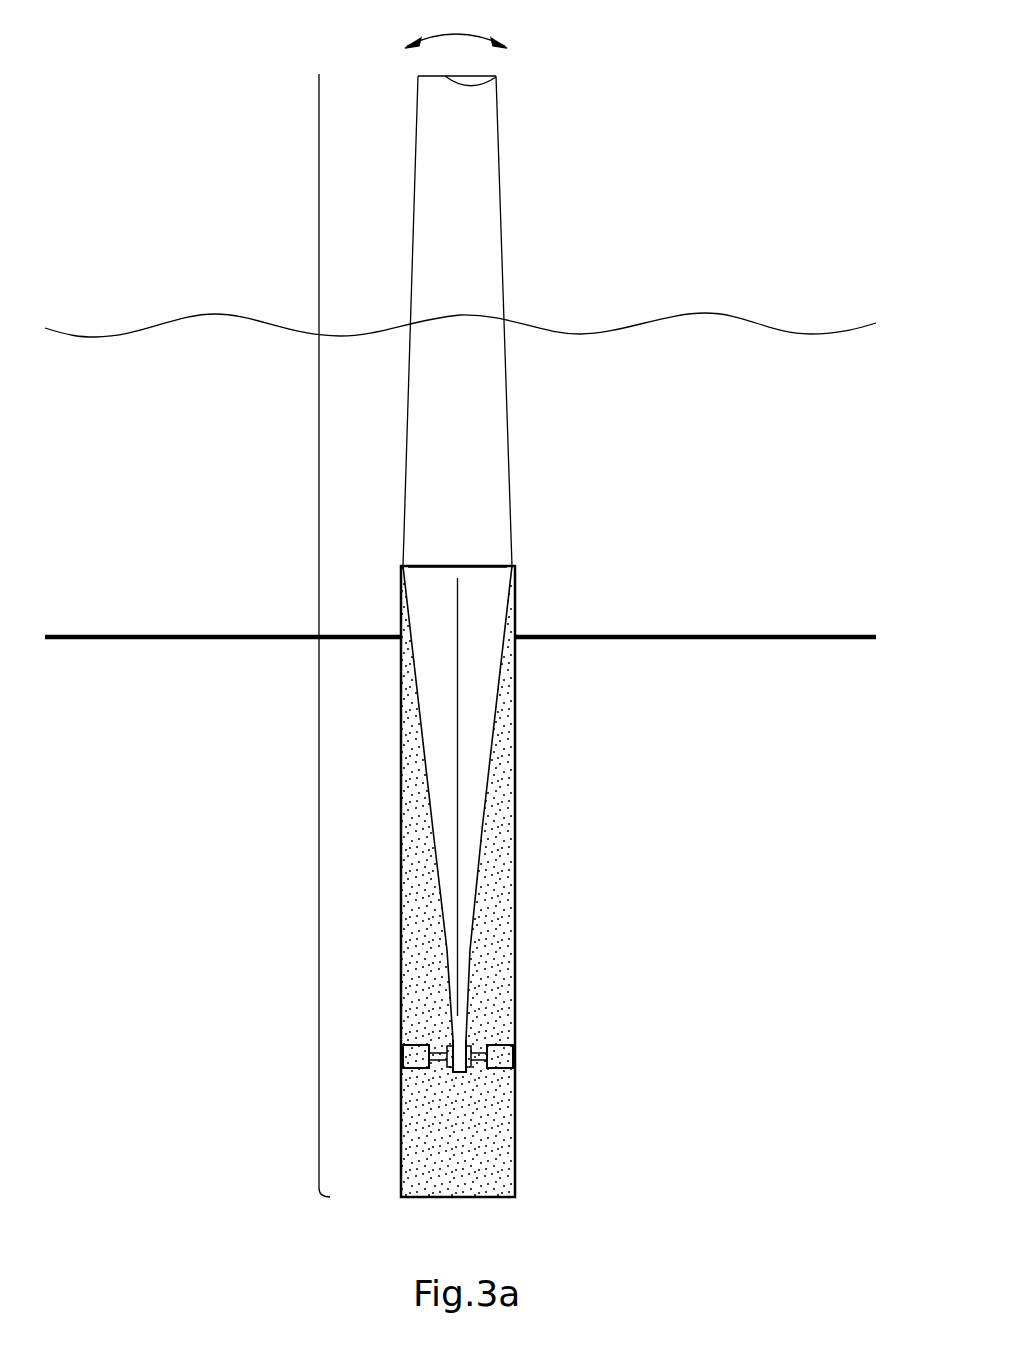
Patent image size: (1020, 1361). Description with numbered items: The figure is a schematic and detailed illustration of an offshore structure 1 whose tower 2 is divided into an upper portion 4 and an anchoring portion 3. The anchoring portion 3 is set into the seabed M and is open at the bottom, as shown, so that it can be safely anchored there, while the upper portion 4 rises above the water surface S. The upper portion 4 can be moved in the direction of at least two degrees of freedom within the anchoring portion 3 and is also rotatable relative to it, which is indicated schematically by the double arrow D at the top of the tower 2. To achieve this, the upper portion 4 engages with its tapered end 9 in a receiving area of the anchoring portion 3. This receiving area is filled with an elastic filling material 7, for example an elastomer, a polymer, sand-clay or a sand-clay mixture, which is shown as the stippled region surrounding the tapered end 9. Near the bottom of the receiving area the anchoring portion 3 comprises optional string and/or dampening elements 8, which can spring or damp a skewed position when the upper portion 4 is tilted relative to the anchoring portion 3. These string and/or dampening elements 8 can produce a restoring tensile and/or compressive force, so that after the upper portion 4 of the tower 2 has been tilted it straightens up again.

The offshore structure 1 is at (667, 79).
The tower 2 is at (480, 150).
The anchoring portion 3 is at (319, 898).
The upper portion 4 is at (319, 248).
The elastic filling material 7 is at (492, 975).
The string and/or dampening elements 8 is at (412, 1058).
The tapered end 9 is at (470, 829).
The double arrow D is at (456, 26).
The water surface S is at (155, 325).
The seabed M is at (734, 633).